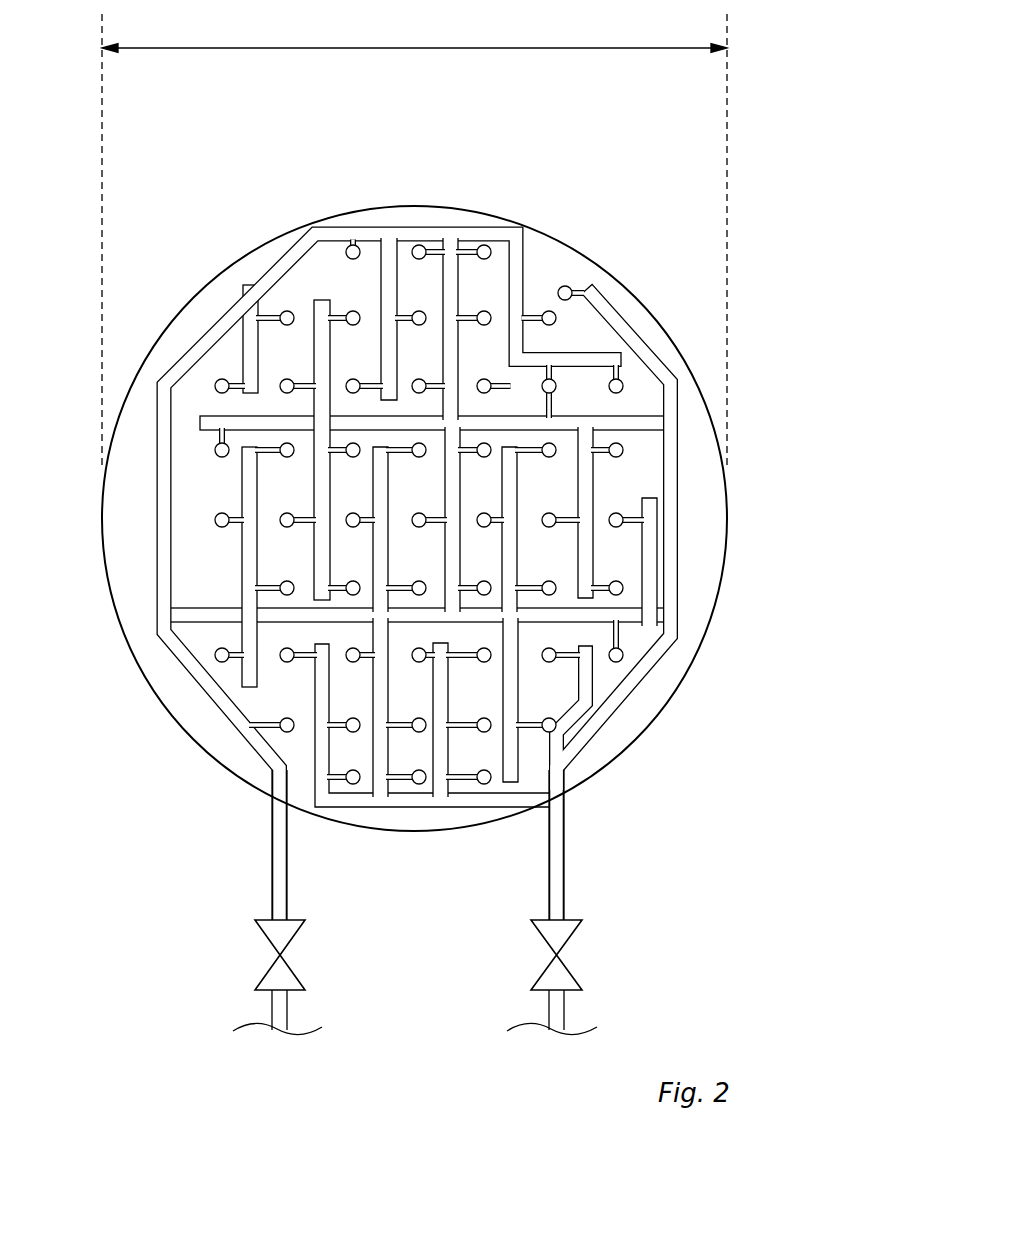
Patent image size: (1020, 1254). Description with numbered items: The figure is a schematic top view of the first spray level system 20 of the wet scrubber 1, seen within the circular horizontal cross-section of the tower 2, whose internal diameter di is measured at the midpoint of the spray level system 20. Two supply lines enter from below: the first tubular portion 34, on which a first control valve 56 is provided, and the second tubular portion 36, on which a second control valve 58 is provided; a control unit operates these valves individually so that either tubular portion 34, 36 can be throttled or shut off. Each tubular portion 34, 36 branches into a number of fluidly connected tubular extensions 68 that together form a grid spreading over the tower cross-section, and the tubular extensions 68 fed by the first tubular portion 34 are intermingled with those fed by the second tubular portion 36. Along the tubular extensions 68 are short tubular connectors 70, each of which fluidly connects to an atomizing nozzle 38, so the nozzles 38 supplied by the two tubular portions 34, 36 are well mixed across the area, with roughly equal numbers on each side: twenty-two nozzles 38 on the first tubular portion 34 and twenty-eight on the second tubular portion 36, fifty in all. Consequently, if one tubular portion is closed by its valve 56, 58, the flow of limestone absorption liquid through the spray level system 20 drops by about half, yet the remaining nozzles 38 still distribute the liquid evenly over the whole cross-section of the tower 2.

The wet scrubber 1 is at (438, 520).
The tower 2 is at (101, 527).
The first spray level system 20 is at (431, 515).
The first tubular portion 34 is at (565, 872).
The second tubular portion 36 is at (272, 860).
The atomizing nozzle 38 is at (550, 308).
The first control valve 56 is at (580, 940).
The second control valve 58 is at (295, 940).
The tubular extension 68 is at (378, 288).
The tubular connector 70 is at (541, 312).